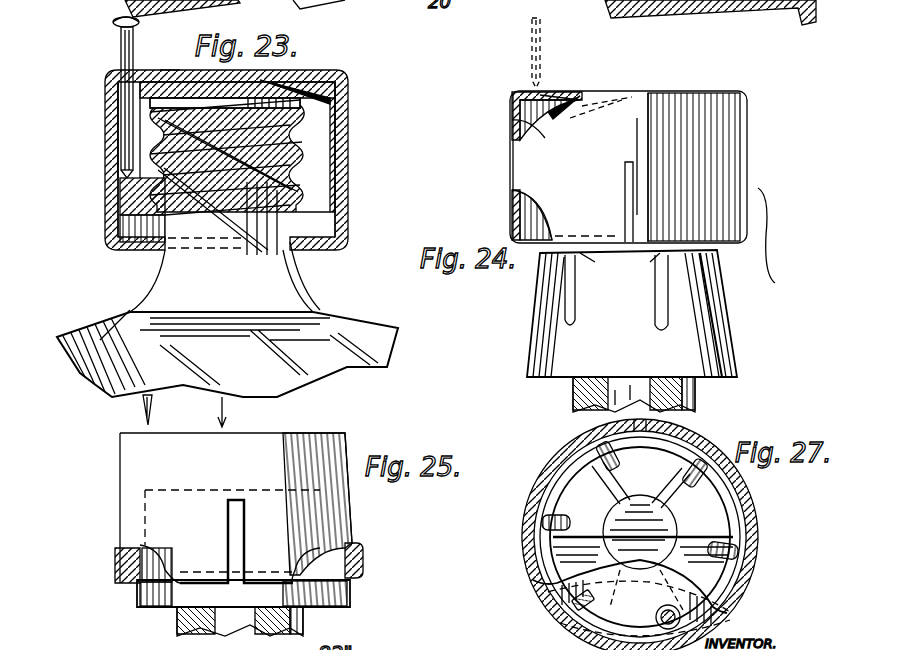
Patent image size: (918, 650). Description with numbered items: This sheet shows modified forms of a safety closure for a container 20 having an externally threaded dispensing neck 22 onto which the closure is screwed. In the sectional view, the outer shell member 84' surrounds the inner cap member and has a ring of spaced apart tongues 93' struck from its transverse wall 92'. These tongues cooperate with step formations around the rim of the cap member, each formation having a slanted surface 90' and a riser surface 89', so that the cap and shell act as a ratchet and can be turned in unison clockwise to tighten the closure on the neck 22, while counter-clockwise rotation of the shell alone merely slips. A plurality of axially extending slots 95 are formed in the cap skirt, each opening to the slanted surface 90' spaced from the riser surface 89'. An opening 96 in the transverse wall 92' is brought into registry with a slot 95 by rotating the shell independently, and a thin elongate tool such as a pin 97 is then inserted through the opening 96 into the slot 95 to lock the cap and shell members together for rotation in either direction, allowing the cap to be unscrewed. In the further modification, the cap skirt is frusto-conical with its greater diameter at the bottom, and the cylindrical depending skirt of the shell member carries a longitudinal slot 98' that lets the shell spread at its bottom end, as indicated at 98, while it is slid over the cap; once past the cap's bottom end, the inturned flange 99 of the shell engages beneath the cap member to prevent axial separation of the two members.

In FIG. 23, the container 20 is at (340, 316).
In FIG. 23, the dispensing neck 22 is at (286, 271).
In FIG. 24, the dispensing neck 22 is at (697, 395).
In FIG. 25, the dispensing neck 22 is at (180, 624).
In FIG. 23, the outer shell member 84' is at (257, 160).
In FIG. 24, the riser surface 89' is at (620, 283).
In FIG. 27, the riser surface 89' is at (641, 537).
In FIG. 23, the slanted surface 90' is at (267, 160).
In FIG. 23, the transverse wall 92' is at (165, 52).
In FIG. 23, the tongues 93' is at (333, 78).
In FIG. 24, the tongues 93' is at (503, 125).
In FIG. 23, the slots 95 is at (142, 130).
In FIG. 24, the slots 95 is at (720, 302).
In FIG. 23, the opening 96 is at (121, 57).
In FIG. 24, the opening 96 is at (545, 100).
In FIG. 23, the pin 97 is at (116, 24).
In FIG. 24, the pin 97 is at (542, 55).
In FIG. 27, the pin 97 is at (658, 612).
In FIG. 25, the spread bottom end 98 is at (382, 594).
In FIG. 25, the longitudinal slot 98' is at (236, 541).
In FIG. 25, the inturned flange 99 is at (350, 588).
In FIG. 27, the inturned flange 99 is at (583, 450).